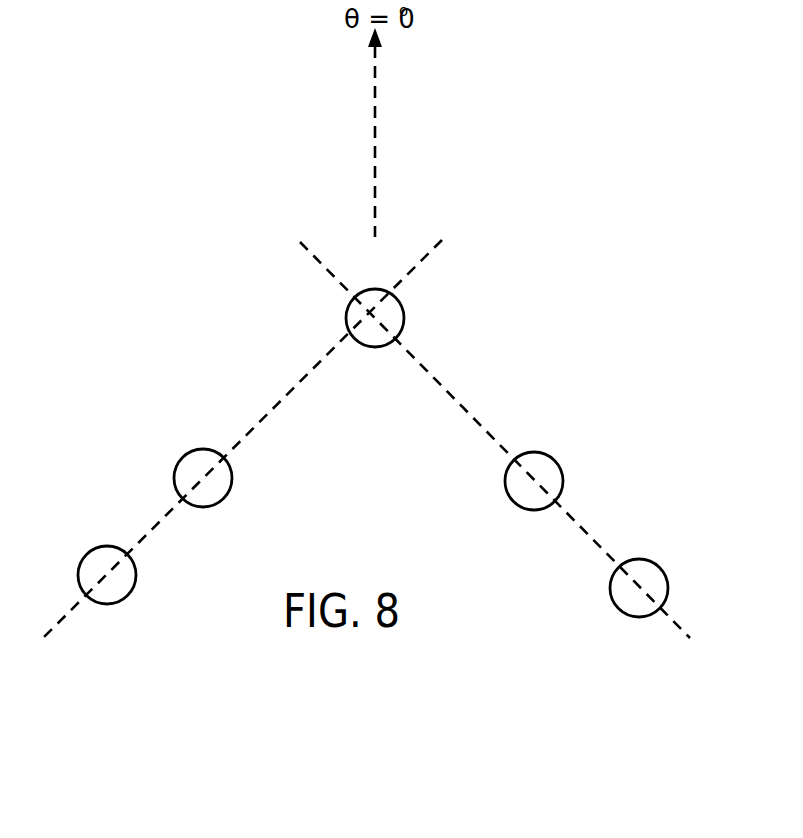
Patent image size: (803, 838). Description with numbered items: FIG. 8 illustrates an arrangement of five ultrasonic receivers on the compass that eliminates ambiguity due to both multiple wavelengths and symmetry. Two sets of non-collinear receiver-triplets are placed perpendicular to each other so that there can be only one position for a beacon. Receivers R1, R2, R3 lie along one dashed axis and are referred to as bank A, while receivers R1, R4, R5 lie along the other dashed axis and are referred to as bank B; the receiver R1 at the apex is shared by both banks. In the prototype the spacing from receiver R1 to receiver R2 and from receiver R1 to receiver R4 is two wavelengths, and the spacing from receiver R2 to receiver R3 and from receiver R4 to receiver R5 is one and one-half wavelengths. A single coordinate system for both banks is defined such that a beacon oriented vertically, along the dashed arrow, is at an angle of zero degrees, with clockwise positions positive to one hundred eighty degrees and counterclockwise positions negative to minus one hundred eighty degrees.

The receiver R1 is at (375, 299).
The receiver R2 is at (186, 478).
The receiver R3 is at (89, 575).
The receiver R4 is at (551, 481).
The receiver R5 is at (656, 587).
The bank A is at (231, 454).
The bank B is at (509, 454).